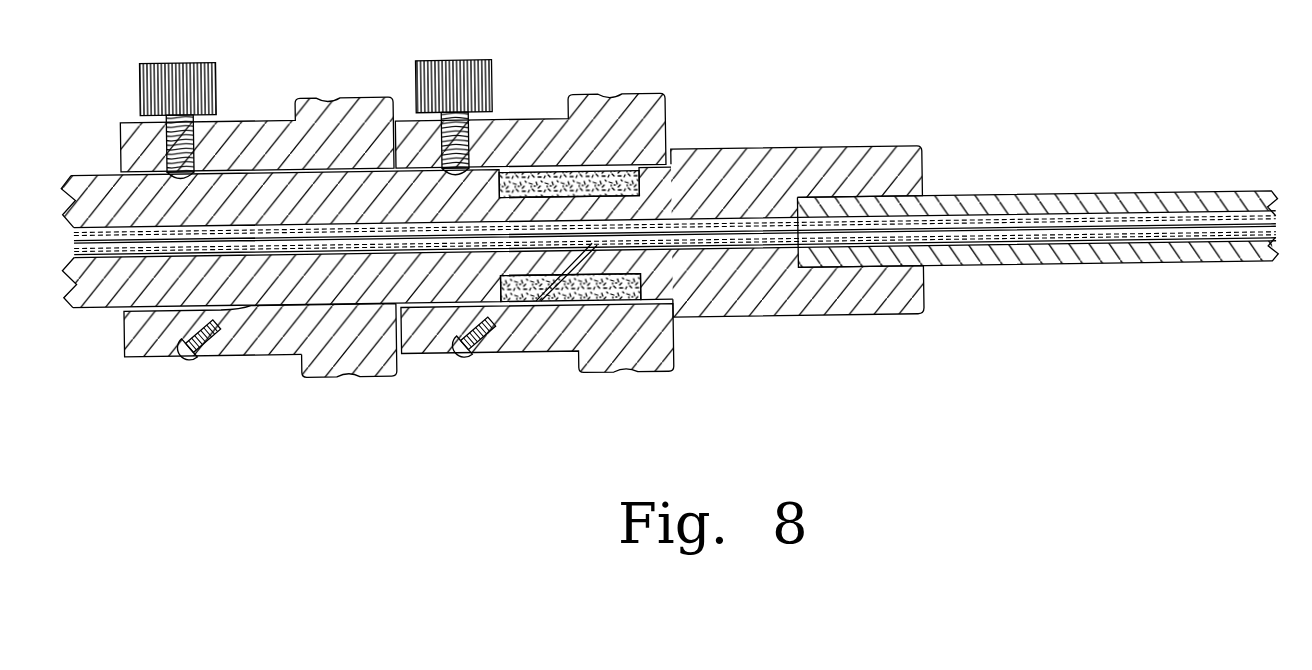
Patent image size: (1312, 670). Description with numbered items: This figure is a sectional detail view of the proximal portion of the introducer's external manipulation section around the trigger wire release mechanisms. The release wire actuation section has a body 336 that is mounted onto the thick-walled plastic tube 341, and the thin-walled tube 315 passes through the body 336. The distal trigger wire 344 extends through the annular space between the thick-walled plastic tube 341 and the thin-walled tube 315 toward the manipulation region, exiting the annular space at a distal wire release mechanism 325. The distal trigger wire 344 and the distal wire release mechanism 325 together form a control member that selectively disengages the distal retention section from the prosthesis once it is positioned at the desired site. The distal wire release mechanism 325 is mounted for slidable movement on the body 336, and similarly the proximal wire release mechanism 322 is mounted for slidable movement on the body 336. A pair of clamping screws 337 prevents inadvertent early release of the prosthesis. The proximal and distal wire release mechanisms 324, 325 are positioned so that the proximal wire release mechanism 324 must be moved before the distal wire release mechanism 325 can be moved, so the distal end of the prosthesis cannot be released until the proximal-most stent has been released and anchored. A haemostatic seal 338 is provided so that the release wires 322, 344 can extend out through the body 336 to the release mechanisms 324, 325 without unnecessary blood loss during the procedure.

The thin-walled tube 315 is at (722, 237).
The proximal wire release mechanism 322 is at (347, 371).
The proximal wire release mechanism 324 is at (272, 378).
The distal wire release mechanism 325 is at (475, 394).
The body 336 is at (760, 165).
The clamping screws 337 is at (418, 82).
The haemostatic seal 338 is at (552, 172).
The thick-walled plastic tube 341 is at (1012, 205).
The distal trigger wire 344 is at (536, 310).